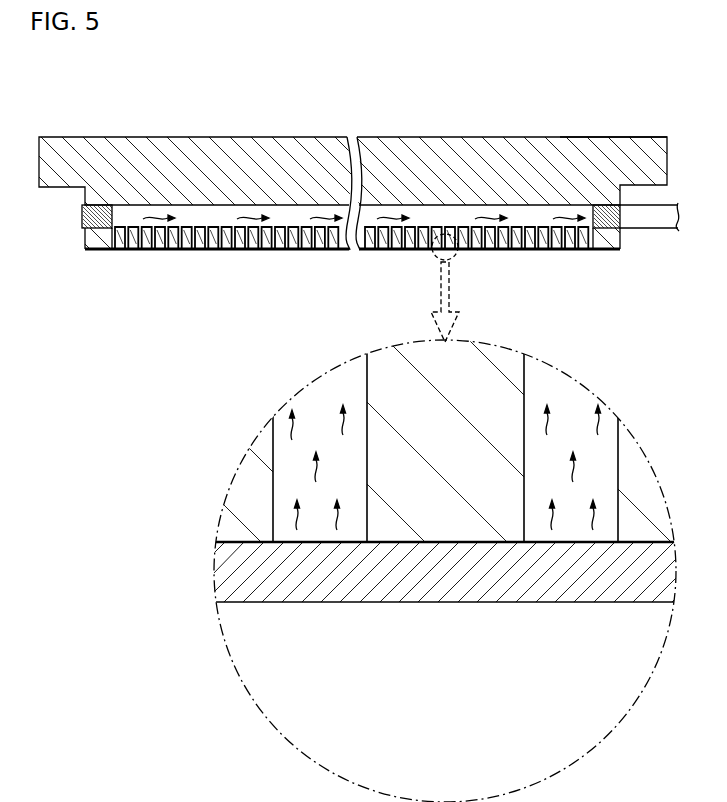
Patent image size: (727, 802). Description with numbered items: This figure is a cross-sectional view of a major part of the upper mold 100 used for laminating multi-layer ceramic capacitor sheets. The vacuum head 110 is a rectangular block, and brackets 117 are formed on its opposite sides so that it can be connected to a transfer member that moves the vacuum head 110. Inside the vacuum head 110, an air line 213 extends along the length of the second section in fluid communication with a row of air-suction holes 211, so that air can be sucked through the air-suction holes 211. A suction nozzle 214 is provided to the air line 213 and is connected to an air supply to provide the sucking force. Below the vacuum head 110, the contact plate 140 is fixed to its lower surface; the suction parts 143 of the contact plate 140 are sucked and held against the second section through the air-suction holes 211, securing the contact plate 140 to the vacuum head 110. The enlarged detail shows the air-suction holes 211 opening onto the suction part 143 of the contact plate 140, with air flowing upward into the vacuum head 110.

The upper mold 100 is at (514, 58).
The vacuum head 110 is at (535, 128).
The bracket 117 is at (645, 150).
The contact plate 140 is at (220, 251).
The suction part 143 is at (372, 590).
The air-suction hole 211 is at (440, 233).
The air line 213 is at (285, 218).
The suction nozzle 214 is at (651, 218).